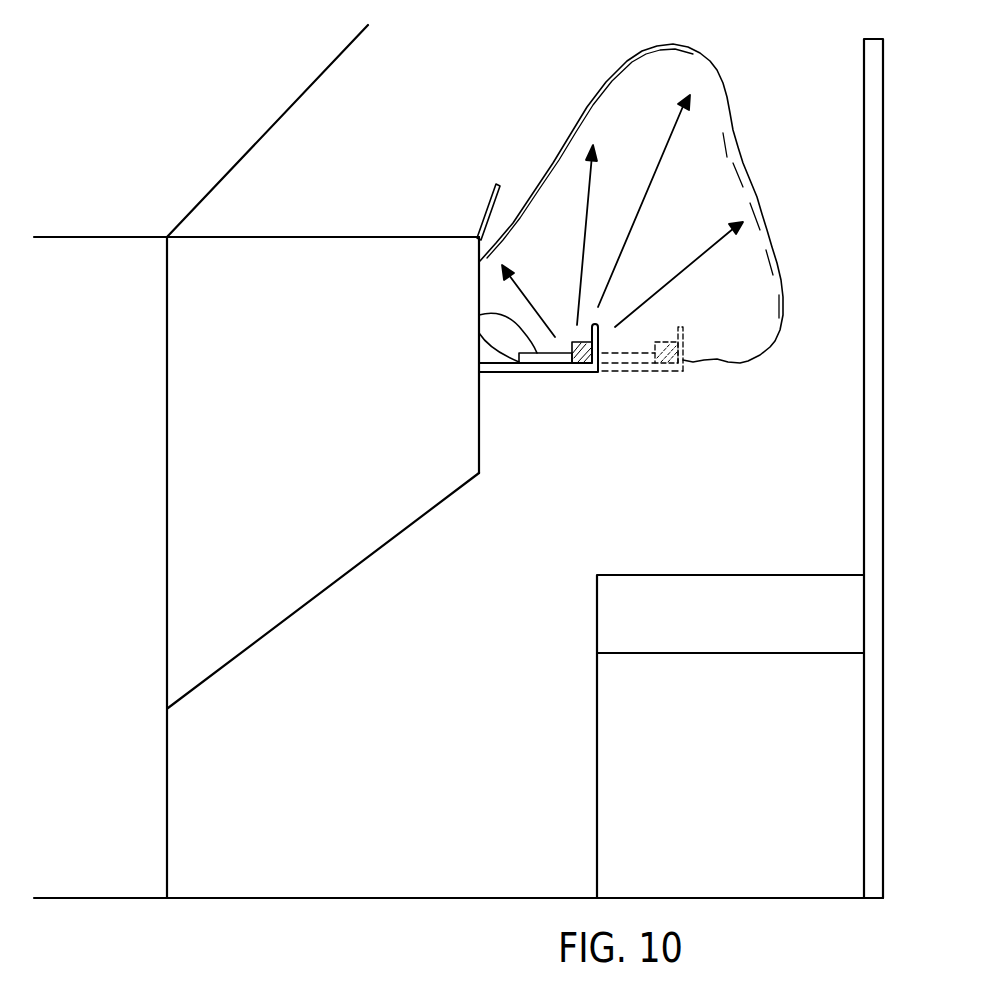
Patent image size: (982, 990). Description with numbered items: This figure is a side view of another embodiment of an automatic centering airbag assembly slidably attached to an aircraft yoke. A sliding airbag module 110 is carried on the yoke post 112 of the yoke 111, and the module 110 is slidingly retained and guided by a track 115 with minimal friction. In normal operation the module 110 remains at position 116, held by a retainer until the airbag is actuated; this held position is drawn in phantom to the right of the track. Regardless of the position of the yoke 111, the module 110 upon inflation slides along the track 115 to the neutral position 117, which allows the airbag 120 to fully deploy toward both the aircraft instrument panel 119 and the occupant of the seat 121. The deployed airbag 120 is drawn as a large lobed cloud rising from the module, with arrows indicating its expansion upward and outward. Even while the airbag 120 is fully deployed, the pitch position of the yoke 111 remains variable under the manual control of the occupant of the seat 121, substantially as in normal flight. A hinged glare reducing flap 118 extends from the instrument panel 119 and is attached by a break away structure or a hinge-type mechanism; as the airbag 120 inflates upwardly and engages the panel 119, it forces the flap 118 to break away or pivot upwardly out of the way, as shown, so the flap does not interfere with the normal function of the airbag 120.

The sliding airbag module 110 is at (670, 325).
The yoke 111 is at (693, 338).
The yoke post 112 is at (645, 365).
The track 115 is at (479, 315).
The position 116 is at (678, 382).
The neutral position 117 is at (560, 383).
The hinged glare reducing flap 118 is at (488, 198).
The aircraft instrument panel 119 is at (440, 477).
The airbag 120 is at (593, 97).
The seat 121 is at (613, 695).